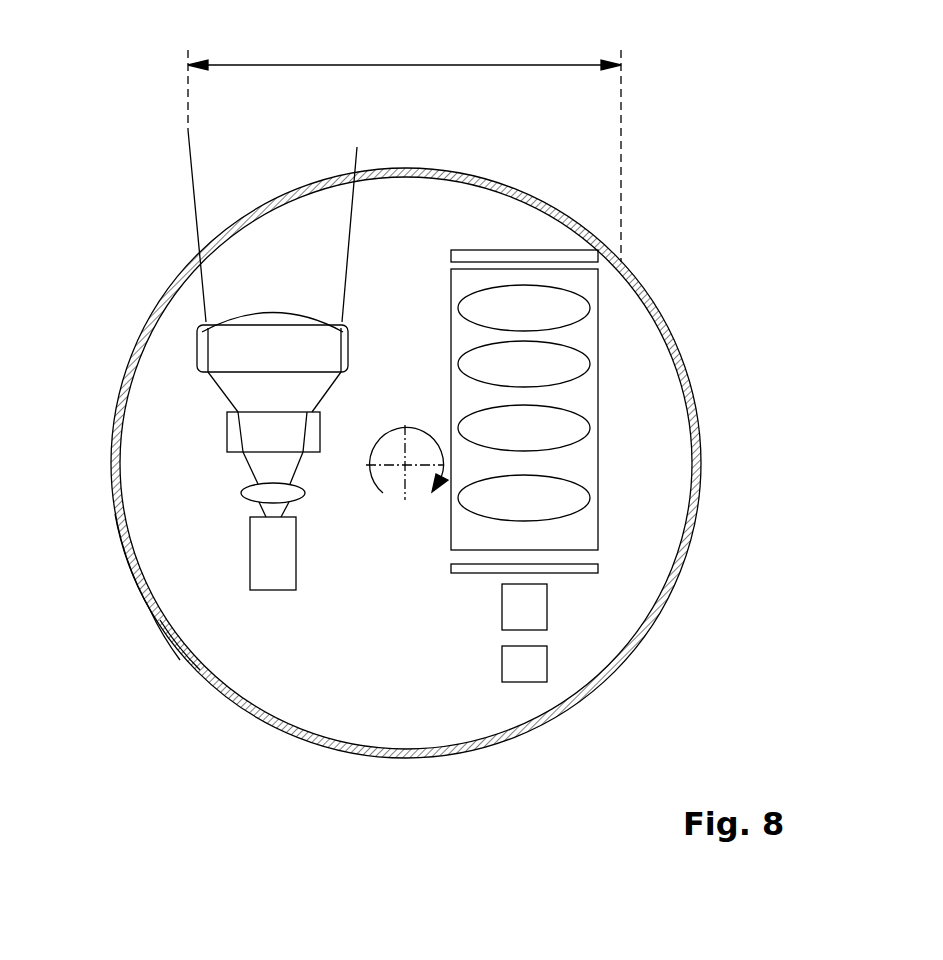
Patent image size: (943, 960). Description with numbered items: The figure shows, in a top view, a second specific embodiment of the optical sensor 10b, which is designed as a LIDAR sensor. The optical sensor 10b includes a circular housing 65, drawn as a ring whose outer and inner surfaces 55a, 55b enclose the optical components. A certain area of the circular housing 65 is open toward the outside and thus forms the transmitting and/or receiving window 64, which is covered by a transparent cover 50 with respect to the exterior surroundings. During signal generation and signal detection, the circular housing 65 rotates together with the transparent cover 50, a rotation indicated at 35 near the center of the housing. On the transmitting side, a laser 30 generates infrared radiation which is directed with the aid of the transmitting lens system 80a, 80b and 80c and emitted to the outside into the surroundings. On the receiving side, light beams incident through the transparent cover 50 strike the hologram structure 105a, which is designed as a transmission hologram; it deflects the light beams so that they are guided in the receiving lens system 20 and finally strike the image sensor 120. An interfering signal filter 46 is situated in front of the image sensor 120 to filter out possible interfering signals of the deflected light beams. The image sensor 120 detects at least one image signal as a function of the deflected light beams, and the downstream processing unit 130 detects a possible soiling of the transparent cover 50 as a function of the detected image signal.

The optical sensor 10b is at (708, 273).
The receiving lens system 20 is at (598, 463).
The laser 30 is at (250, 554).
The rotation axis 35 is at (393, 428).
The interfering signal filter 46 is at (598, 570).
The transparent cover 50 is at (502, 183).
The outer surface of housing 55a is at (158, 636).
The inner surface of housing 55b is at (190, 647).
The transmitting and/or receiving window 64 is at (405, 63).
The housing 65 is at (133, 580).
The transmitting lens system 80a is at (197, 352).
The transmitting lens system 80b is at (227, 434).
The transmitting lens system 80c is at (241, 494).
The hologram structure 105a is at (592, 256).
The image sensor 120 is at (502, 606).
The processing unit 130 is at (502, 665).